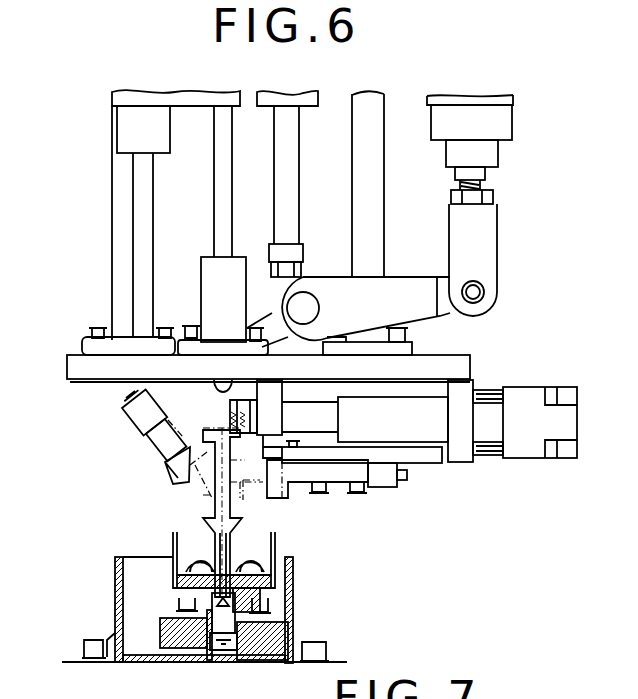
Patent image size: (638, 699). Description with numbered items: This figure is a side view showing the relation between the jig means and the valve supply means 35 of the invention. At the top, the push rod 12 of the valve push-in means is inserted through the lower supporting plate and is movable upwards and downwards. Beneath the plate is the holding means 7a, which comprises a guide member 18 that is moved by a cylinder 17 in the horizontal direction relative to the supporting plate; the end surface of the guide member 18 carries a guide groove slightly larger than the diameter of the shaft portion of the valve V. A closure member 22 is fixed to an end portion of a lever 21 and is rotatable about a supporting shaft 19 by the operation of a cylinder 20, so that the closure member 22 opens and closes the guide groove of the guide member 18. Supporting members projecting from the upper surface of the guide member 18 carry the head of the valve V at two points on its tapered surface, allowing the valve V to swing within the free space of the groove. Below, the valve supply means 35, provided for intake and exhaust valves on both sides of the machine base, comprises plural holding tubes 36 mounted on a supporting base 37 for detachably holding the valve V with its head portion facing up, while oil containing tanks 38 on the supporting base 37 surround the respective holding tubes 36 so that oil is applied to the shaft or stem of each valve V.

The push rod 12 is at (222, 194).
The cylinder 20 is at (473, 98).
The supporting shaft 19 is at (305, 310).
The cylinder 17 is at (520, 400).
The guide member 18 is at (333, 470).
The lever 21 is at (168, 399).
The closure member 22 is at (168, 476).
The valve V is at (224, 428).
The holding tube 36 is at (212, 540).
The oil containing tank 38 is at (270, 545).
The supporting base 37 is at (256, 642).
The valve supply means 35 is at (161, 674).
The holding means 7a is at (317, 500).